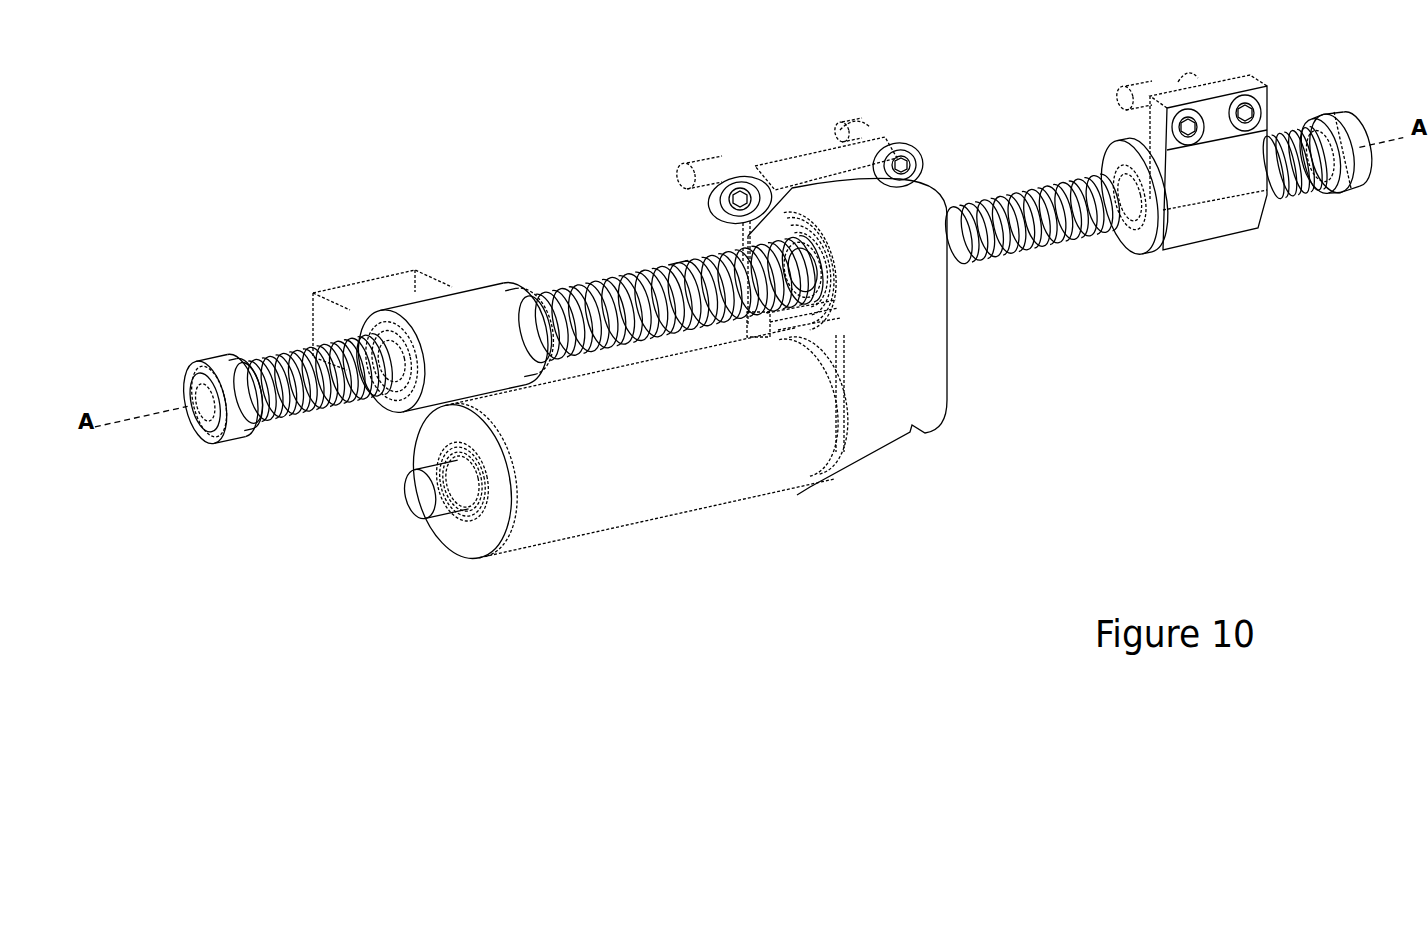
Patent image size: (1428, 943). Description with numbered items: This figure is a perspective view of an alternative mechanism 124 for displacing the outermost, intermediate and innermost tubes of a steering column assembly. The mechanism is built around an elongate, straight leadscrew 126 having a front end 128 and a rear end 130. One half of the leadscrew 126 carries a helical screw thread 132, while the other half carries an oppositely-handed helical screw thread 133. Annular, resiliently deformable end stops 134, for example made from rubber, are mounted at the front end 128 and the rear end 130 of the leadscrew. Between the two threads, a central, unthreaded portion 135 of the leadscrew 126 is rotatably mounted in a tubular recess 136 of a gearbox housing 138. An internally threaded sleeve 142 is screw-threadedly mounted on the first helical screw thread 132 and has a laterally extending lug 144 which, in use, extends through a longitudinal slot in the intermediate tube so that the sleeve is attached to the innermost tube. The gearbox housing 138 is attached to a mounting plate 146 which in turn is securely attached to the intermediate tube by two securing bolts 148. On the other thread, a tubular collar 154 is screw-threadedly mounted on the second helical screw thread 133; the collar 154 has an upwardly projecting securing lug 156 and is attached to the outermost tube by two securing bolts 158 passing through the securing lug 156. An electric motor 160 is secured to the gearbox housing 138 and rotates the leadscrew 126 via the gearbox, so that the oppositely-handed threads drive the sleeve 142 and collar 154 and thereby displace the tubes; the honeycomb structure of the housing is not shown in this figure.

The mechanism 124 is at (473, 130).
The leadscrew 126 is at (647, 263).
The front end 128 is at (186, 395).
The rear end 130 is at (1356, 144).
The helical screw thread 132 is at (607, 298).
The oppositely-handed helical screw thread 133 is at (1010, 208).
The end stops 134 is at (238, 416).
The central unthreaded portion 135 is at (815, 284).
The tubular recess 136 is at (800, 236).
The gearbox housing 138 is at (926, 368).
The internally threaded sleeve 142 is at (462, 296).
The laterally extending lug 144 is at (392, 287).
The mounting plate 146 is at (753, 163).
The securing bolts 148 is at (693, 163).
The tubular collar 154 is at (1185, 226).
The securing lug 156 is at (1230, 156).
The securing bolts 158 is at (1135, 88).
The electric motor 160 is at (688, 463).